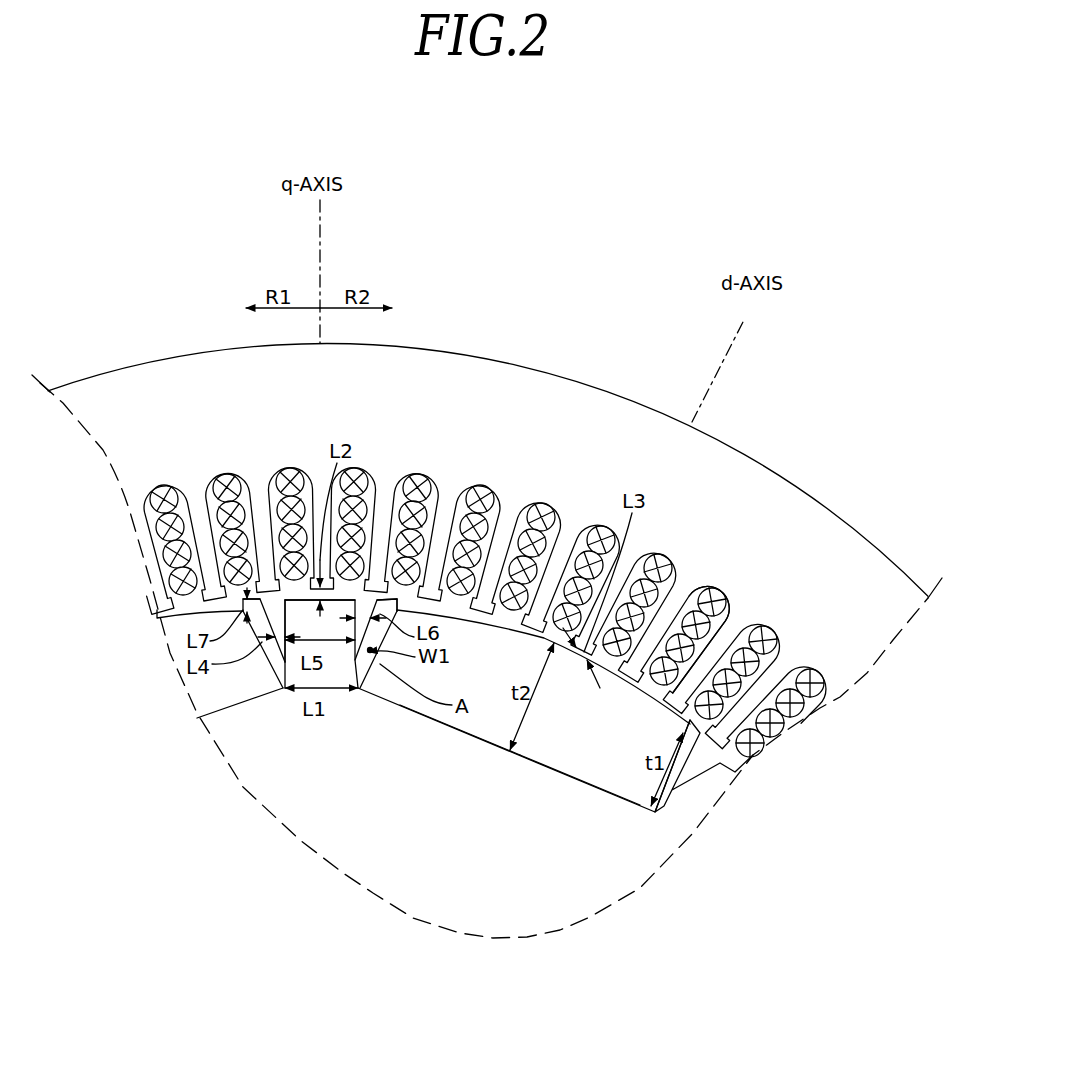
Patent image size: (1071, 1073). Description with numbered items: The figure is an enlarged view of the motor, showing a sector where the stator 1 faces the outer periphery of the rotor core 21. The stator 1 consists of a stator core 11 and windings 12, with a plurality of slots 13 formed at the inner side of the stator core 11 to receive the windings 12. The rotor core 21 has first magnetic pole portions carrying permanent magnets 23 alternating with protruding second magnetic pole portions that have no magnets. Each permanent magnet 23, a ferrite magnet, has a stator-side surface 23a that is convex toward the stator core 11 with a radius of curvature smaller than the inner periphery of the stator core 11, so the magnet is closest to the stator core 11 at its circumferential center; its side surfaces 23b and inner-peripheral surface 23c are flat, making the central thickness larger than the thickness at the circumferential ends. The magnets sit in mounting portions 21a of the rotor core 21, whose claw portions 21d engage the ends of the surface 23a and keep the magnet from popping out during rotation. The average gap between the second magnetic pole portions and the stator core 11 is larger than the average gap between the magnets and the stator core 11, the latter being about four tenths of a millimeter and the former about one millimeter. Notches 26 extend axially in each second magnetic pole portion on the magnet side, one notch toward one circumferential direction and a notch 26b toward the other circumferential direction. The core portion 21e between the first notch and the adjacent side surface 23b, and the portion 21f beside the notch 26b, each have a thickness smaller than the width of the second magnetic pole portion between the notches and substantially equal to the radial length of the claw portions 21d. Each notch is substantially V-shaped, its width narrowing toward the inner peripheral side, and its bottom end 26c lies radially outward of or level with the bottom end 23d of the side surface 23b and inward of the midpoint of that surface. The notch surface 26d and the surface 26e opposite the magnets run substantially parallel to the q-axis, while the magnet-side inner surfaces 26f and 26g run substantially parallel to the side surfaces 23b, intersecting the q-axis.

The stator 1 is at (622, 386).
The stator core 11 is at (556, 393).
The windings 12 is at (660, 553).
The slots 13 is at (720, 603).
The rotor core 21 is at (355, 876).
The mounting portions 21a is at (547, 744).
The claw portions 21d is at (198, 490).
The portion located between the notch and the side surface of the permanent magnet 21e is at (268, 668).
The portion located between the notch and the side surface of the permanent magnet 21f is at (365, 662).
The permanent magnets 23 is at (598, 772).
The surface on the side of the stator core 23a is at (508, 620).
The side surfaces 23b is at (660, 812).
The surface on the inner peripheral side 23c is at (480, 735).
The bottom end of the side surface 23d is at (357, 700).
The notches 26 is at (285, 600).
The notch 26b is at (320, 600).
The bottom end of the notch 26c is at (362, 692).
The inner surface of the notch 26d is at (262, 598).
The inner surface of the notch 26e is at (362, 600).
The inner surface of the notch on the side of the permanent magnet 26f is at (243, 605).
The inner surface of the notch on the side of the permanent magnet 26g is at (395, 600).